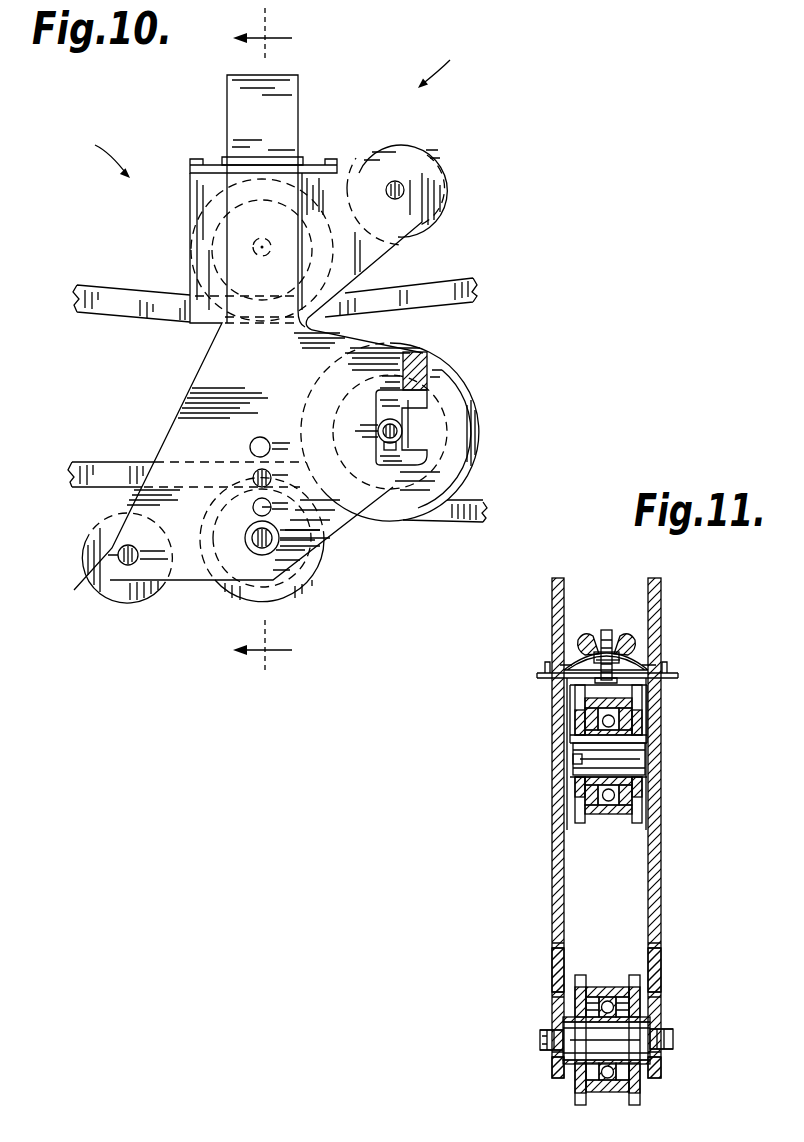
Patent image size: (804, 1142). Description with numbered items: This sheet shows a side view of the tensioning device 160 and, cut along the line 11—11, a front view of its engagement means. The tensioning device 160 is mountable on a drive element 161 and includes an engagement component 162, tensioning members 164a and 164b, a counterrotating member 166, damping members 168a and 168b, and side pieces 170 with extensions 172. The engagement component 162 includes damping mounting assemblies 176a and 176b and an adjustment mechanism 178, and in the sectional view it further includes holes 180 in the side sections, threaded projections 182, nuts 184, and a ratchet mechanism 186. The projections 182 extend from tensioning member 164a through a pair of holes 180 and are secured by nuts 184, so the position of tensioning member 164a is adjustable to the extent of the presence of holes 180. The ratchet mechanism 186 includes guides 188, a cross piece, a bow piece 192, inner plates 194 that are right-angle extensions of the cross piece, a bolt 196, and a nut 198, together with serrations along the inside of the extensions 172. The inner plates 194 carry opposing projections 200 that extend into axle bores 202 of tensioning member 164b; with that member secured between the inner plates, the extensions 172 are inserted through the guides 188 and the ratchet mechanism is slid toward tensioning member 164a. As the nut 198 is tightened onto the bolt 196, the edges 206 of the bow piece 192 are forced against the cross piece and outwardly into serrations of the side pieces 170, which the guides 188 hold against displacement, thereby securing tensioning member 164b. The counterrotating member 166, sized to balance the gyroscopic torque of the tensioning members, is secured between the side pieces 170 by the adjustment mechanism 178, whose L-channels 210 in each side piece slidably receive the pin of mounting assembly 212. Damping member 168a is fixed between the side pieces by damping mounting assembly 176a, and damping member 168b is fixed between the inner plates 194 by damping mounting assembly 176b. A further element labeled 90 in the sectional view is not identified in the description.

In FIG. 10, the section line 11 is at (270, 343).
In FIG. 11, the cable 90 is at (625, 660).
In FIG. 10, the tensioning device 160 is at (458, 65).
In FIG. 10, the drive element 161 is at (97, 285).
In FIG. 10, the engagement component 162 is at (99, 149).
In FIG. 10, the tensioning member 164a is at (312, 588).
In FIG. 11, the tensioning member 164a is at (577, 1095).
In FIG. 10, the tensioning member 164b is at (372, 268).
In FIG. 11, the tensioning member 164b is at (577, 703).
In FIG. 10, the counterrotating member 166 is at (480, 452).
In FIG. 10, the damping member 168a is at (143, 600).
In FIG. 10, the damping member 168b is at (427, 160).
In FIG. 10, the side pieces 170 is at (185, 405).
In FIG. 11, the side pieces 170 is at (661, 866).
In FIG. 10, the extensions 172 is at (290, 102).
In FIG. 11, the extensions 172 is at (661, 592).
In FIG. 10, the damping mounting assembly 176a is at (102, 589).
In FIG. 10, the damping mounting assembly 176b is at (404, 190).
In FIG. 10, the adjustment mechanism 178 is at (436, 386).
In FIG. 10, the holes 180 is at (268, 508).
In FIG. 11, the holes 180 is at (661, 950).
In FIG. 11, the threaded projections 182 is at (673, 1038).
In FIG. 11, the nuts 184 is at (667, 1022).
In FIG. 11, the ratchet mechanism 186 is at (573, 579).
In FIG. 10, the guides 188 is at (292, 157).
In FIG. 11, the guides 188 is at (680, 676).
In FIG. 11, the bow piece 192 is at (575, 666).
In FIG. 11, the inner plates 194 is at (648, 805).
In FIG. 11, the bolt 196 is at (620, 636).
In FIG. 11, the nut 198 is at (605, 630).
In FIG. 11, the opposing projections 200 is at (645, 750).
In FIG. 11, the axle bores 202 is at (580, 757).
In FIG. 11, the edges 206 is at (567, 668).
In FIG. 10, the L-channels 210 is at (397, 393).
In FIG. 10, the mounting assembly 212 is at (405, 430).